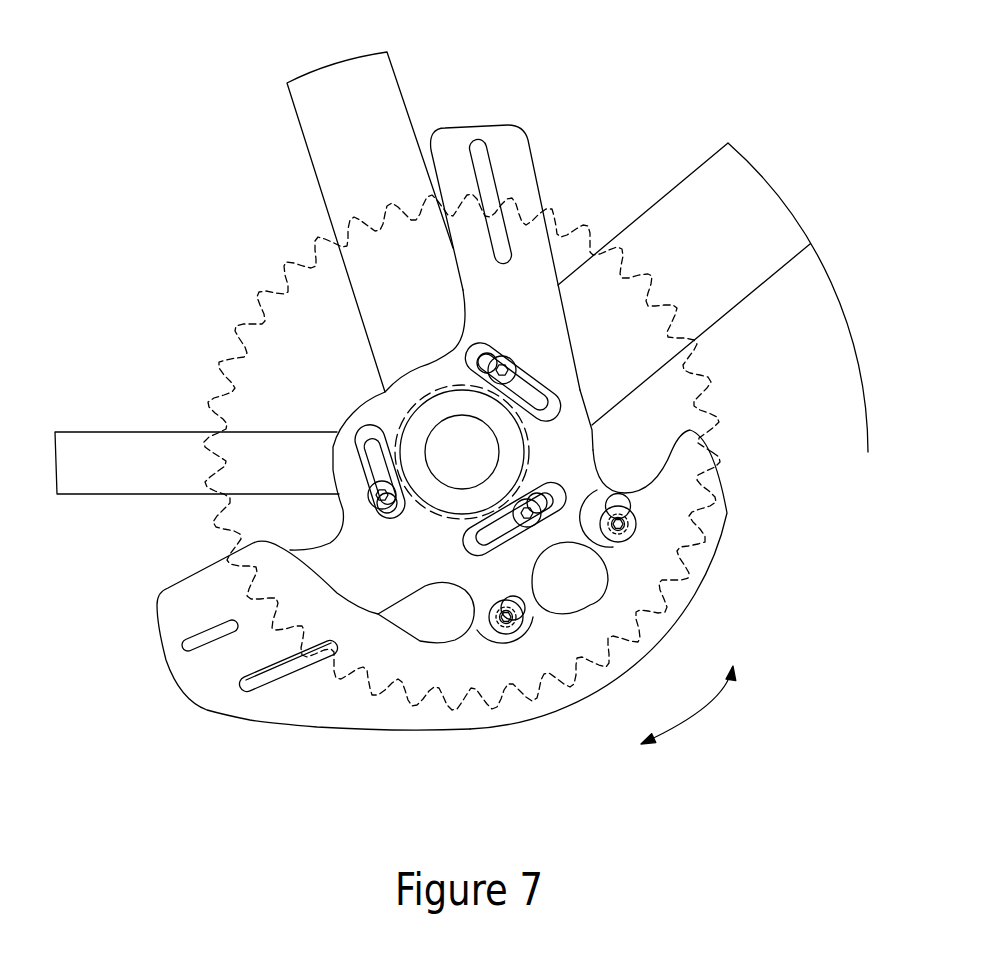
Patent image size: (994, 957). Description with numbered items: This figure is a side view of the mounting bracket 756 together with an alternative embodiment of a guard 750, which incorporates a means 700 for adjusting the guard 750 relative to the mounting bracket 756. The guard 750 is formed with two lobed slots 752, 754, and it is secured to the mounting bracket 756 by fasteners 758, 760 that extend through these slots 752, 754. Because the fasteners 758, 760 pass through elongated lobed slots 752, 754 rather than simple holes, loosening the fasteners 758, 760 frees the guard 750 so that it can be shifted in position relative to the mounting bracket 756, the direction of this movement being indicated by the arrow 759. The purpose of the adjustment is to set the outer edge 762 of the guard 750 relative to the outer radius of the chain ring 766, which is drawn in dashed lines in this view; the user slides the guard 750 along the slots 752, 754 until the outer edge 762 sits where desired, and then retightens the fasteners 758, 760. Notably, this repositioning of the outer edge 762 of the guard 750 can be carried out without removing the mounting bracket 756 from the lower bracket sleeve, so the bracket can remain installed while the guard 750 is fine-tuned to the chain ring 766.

The means for adjusting the guard 700 is at (560, 565).
The guard 750 is at (712, 526).
The lobed slot 752 is at (622, 498).
The lobed slot 754 is at (483, 626).
The mounting bracket 756 is at (523, 167).
The fastener 758 is at (515, 625).
The arrow 759 is at (708, 712).
The fastener 760 is at (633, 525).
The outer edge 762 is at (210, 714).
The chain ring 766 is at (222, 362).